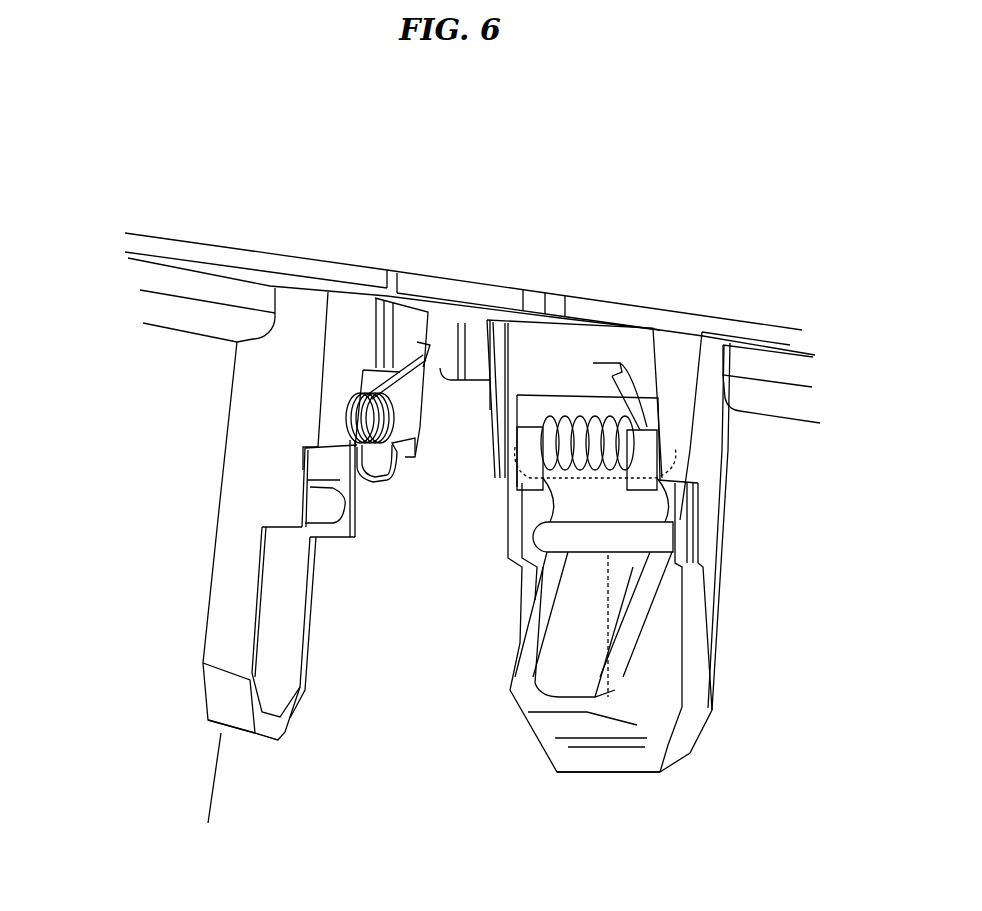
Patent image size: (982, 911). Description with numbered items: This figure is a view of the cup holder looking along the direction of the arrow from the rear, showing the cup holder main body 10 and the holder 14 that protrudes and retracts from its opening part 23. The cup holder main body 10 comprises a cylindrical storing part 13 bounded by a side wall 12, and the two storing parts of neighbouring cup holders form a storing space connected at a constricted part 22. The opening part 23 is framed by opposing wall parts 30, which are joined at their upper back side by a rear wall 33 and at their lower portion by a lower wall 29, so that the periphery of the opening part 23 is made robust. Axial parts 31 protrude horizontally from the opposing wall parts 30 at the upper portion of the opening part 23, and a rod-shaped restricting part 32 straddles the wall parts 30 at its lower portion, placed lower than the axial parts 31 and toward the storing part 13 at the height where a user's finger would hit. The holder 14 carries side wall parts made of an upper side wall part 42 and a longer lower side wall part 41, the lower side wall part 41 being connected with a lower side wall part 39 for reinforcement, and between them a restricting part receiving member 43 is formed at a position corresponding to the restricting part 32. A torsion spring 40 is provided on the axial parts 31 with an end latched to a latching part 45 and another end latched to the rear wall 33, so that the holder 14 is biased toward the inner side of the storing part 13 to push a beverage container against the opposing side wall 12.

The cup holder main body 10 is at (87, 246).
The side wall 12 is at (72, 512).
The storing part 13 is at (86, 680).
The holder 14 is at (393, 480).
The constricted part 22 is at (453, 427).
The opening part 23 is at (273, 673).
The lower wall 29 is at (270, 730).
The wall part 30 is at (225, 595).
The axial part 31 is at (543, 443).
The restricting part 32 is at (322, 517).
The rear wall 33 is at (423, 307).
The lower side wall part 39 is at (557, 727).
The torsion spring 40 is at (390, 423).
The lower side wall part 41 is at (568, 672).
The upper side wall part 42 is at (645, 537).
The restricting part receiving member 43 is at (540, 400).
The latching part 45 is at (440, 368).